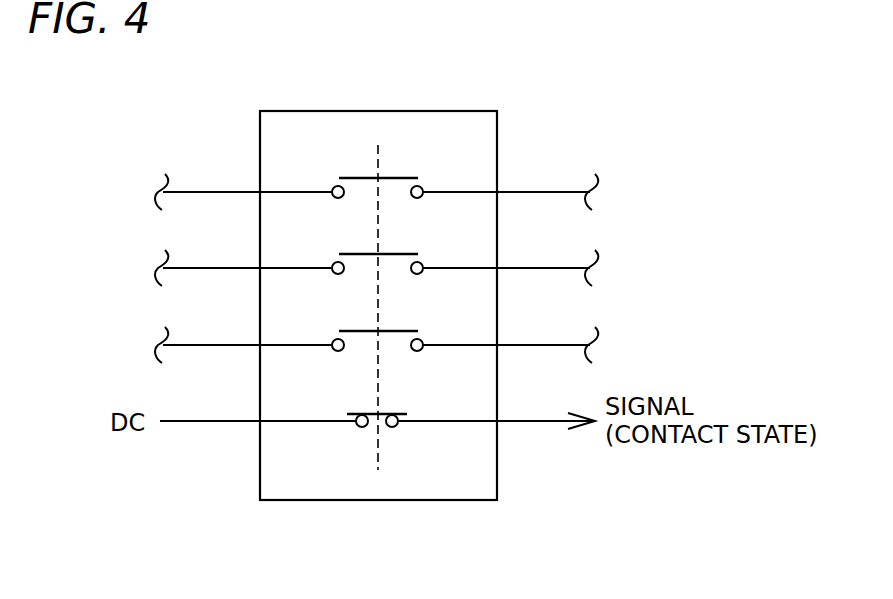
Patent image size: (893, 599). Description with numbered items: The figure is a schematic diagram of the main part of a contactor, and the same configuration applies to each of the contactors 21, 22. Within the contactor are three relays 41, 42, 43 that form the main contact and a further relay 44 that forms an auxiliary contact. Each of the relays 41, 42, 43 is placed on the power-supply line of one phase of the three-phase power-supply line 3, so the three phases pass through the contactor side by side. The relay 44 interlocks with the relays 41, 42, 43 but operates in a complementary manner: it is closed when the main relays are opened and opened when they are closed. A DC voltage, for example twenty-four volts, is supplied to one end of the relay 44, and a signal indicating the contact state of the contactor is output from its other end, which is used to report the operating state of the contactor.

The contactor 21 is at (398, 289).
The contactor 22 is at (425, 111).
The three-phase power-supply line 3 is at (522, 353).
The relay 41 is at (403, 172).
The relay 42 is at (403, 248).
The relay 43 is at (403, 325).
The relay 44 is at (392, 413).